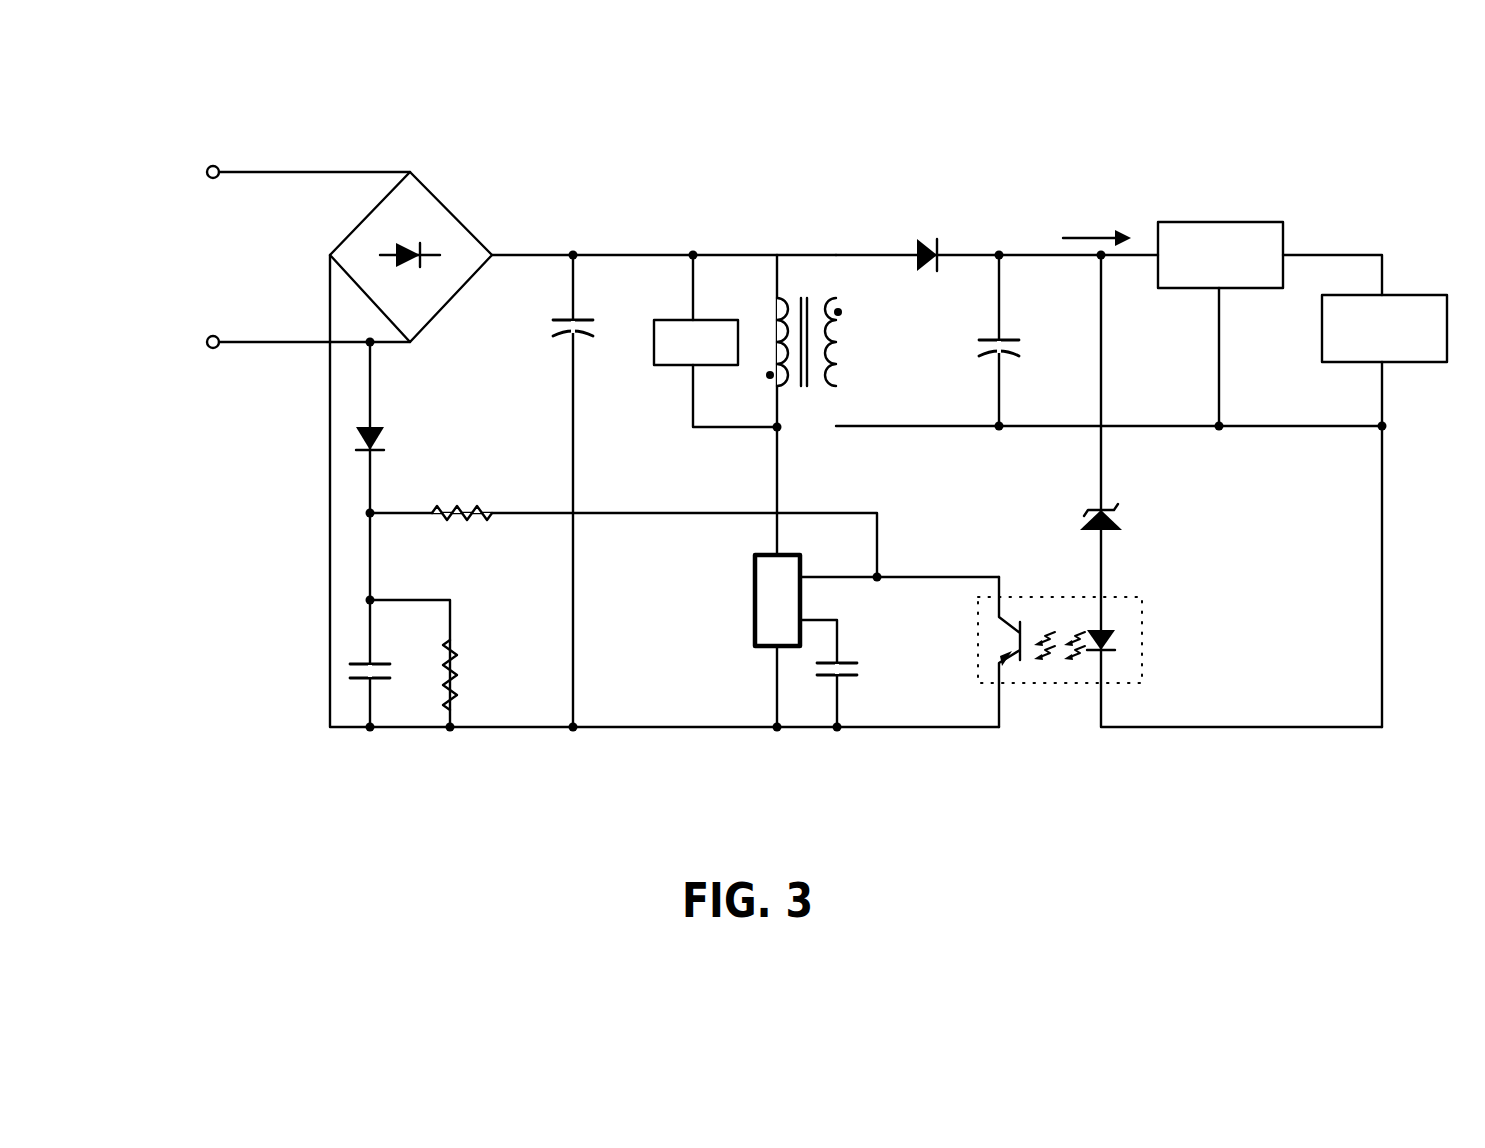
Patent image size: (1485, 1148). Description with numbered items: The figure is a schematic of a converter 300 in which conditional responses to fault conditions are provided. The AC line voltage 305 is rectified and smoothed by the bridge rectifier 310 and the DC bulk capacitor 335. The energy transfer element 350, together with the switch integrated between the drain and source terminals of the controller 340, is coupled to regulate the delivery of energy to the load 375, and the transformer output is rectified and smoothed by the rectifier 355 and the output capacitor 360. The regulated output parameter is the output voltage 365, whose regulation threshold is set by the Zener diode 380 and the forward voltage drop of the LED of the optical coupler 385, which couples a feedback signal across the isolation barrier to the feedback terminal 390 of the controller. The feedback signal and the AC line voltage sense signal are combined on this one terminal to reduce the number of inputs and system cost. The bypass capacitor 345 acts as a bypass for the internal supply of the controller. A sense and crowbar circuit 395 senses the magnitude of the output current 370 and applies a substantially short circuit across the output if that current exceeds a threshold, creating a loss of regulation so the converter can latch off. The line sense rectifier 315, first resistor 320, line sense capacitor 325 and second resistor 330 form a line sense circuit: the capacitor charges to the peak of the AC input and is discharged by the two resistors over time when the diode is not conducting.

The converter 300 is at (935, 130).
The AC line voltage VIN 305 is at (187, 258).
The bridge rectifier BR1 310 is at (458, 203).
The rectifier D3 315 is at (396, 428).
The resistor R1 320 is at (465, 497).
The capacitor C3 325 is at (380, 656).
The resistor R2 330 is at (466, 661).
The DC bulk capacitor C1 335 is at (590, 351).
The controller U1 340 is at (743, 595).
The capacitor C4 345 is at (862, 667).
The energy transfer element T1 350 is at (800, 408).
The rectifier D1 355 is at (905, 246).
The capacitor C2 360 is at (966, 365).
The output voltage VO 365 is at (1047, 323).
The output current IO 370 is at (1107, 205).
The load 375 is at (1420, 289).
The Zener diode D4 380 is at (1128, 515).
The optical coupler U2 385 is at (1040, 704).
The feedback terminal EN 390 is at (830, 583).
The sense and crowbar circuit 395 is at (1268, 219).